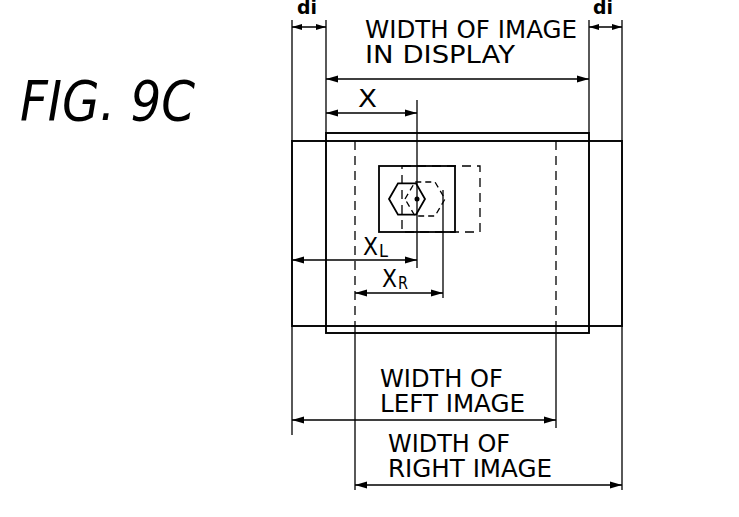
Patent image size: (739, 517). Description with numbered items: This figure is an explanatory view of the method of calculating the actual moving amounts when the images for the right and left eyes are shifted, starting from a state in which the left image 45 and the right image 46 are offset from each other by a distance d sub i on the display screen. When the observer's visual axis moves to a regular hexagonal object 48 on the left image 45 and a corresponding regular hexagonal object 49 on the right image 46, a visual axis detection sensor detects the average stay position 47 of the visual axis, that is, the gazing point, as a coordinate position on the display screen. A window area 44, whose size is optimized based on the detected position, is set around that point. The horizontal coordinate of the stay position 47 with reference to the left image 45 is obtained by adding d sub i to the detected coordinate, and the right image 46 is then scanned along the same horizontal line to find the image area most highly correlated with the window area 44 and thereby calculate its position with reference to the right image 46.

The window area 44 is at (437, 166).
The left image 45 is at (292, 158).
The right image 46 is at (610, 163).
The average stay position of the visual axis 47 is at (420, 200).
The regular hexagonal object 48 is at (390, 200).
The regular hexagonal object 49 is at (417, 199).